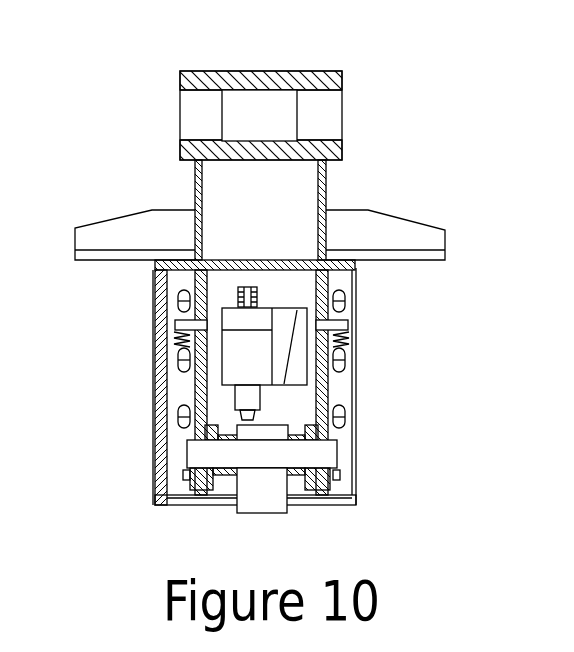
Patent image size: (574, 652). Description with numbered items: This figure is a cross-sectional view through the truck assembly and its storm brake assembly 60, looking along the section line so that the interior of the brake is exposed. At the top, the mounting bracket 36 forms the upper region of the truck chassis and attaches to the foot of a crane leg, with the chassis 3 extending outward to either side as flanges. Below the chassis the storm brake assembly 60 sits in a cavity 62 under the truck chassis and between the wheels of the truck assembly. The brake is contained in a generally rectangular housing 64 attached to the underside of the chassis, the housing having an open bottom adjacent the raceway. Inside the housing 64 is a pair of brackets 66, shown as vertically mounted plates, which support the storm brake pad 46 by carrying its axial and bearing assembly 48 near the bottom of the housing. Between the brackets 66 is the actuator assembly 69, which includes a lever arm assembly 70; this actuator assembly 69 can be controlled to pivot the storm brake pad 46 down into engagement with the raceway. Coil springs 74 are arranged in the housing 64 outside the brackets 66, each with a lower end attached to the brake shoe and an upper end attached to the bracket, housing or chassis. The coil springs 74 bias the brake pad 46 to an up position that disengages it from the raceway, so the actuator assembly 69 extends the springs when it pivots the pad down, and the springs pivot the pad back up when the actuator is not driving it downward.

The flange 3 is at (390, 226).
The mounting bracket 36 is at (270, 76).
The storm brake pad 46 is at (258, 513).
The axial and bearing assembly 48 is at (338, 456).
The storm brake assembly 60 is at (118, 310).
The cavity 62 is at (170, 258).
The housing 64 is at (155, 368).
The brackets 66 is at (158, 410).
The actuator assembly 69 is at (264, 370).
The lever arm assembly 70 is at (244, 287).
The coil springs 74 is at (170, 470).